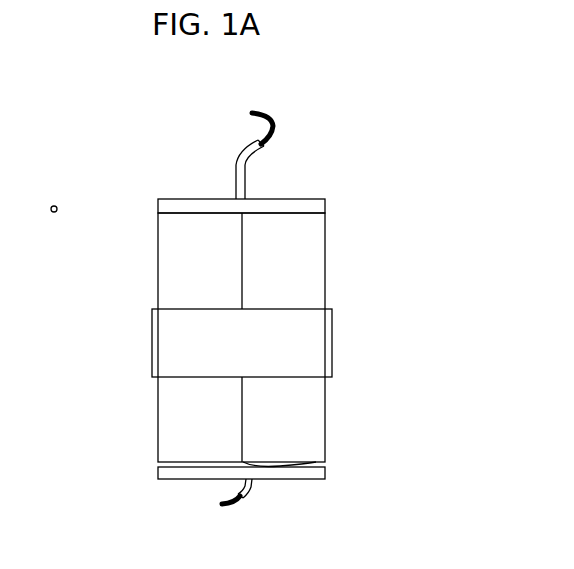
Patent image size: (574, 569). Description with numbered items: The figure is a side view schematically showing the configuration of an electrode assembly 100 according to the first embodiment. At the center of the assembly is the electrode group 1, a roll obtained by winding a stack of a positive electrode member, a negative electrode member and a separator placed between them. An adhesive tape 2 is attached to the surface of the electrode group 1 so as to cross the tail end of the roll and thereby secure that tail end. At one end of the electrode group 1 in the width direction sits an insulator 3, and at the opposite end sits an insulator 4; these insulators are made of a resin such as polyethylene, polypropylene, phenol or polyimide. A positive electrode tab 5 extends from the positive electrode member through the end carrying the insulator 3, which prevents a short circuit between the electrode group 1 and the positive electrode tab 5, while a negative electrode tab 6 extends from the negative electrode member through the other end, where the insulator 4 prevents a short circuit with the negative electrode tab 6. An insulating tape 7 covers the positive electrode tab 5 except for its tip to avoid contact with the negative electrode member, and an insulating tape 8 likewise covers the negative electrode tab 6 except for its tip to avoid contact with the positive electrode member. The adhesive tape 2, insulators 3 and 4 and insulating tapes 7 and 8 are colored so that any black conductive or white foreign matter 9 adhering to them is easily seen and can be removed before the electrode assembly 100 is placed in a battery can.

The electrode assembly 100 is at (298, 97).
The electrode group 1 is at (314, 257).
The adhesive tape 2 is at (325, 343).
The insulator 3 is at (317, 206).
The insulator 4 is at (314, 470).
The positive electrode tab 5 is at (275, 133).
The negative electrode tab 6 is at (230, 500).
The insulating tape 7 is at (246, 175).
The insulating tape 8 is at (252, 486).
The foreign matter 9 is at (54, 205).